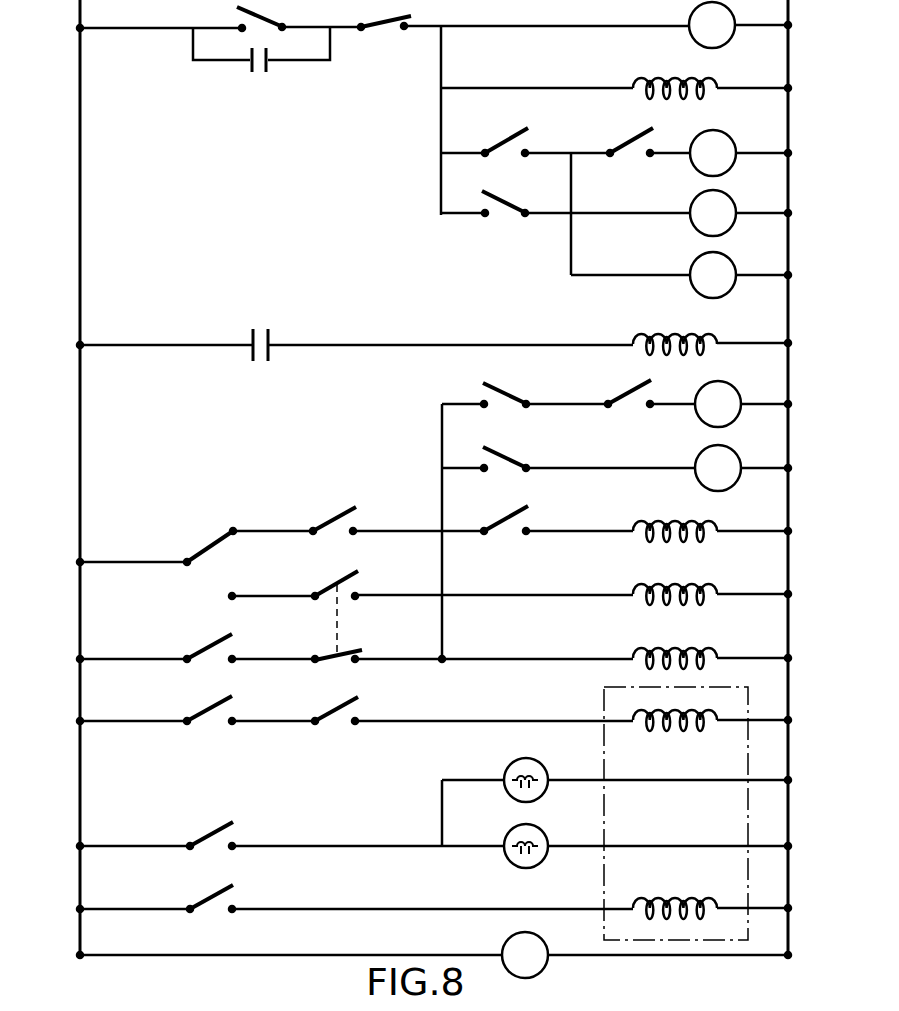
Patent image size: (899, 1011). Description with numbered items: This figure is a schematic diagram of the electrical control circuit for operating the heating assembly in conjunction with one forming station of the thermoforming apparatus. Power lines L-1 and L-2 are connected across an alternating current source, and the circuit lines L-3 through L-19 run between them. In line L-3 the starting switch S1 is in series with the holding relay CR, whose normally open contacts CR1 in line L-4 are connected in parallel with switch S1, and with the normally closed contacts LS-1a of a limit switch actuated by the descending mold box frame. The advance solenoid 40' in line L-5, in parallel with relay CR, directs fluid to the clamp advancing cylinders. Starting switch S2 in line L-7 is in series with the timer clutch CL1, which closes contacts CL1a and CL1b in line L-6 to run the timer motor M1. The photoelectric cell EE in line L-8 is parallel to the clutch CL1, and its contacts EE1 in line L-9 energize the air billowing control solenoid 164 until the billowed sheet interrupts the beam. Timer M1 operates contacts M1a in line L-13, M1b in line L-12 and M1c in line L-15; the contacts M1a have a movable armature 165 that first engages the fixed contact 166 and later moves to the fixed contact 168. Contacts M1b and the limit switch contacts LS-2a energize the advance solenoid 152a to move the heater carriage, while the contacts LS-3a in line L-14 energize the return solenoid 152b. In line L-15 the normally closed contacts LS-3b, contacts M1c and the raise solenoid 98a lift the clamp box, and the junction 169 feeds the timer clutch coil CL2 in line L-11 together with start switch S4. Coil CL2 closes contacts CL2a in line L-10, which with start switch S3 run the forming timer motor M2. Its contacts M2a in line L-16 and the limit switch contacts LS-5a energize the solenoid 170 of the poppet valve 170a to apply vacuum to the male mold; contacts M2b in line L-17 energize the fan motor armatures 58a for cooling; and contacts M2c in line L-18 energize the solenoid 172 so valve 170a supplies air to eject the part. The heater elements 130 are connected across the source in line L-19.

The power line L-1 is at (80, 12).
The power line L-2 is at (790, 12).
The circuit line L-3 is at (103, 28).
The circuit line L-4 is at (302, 62).
The circuit line L-5 is at (464, 87).
The circuit line L-6 is at (466, 153).
The circuit line L-7 is at (464, 215).
The circuit line L-8 is at (646, 276).
The circuit line L-9 is at (458, 342).
The circuit line L-10 is at (466, 408).
The circuit line L-11 is at (466, 472).
The circuit line L-12 is at (276, 531).
The circuit line L-13 is at (138, 564).
The circuit line L-14 is at (466, 594).
The circuit line L-15 is at (466, 659).
The circuit line L-16 is at (466, 721).
The circuit line L-17 is at (388, 846).
The circuit line L-18 is at (392, 908).
The circuit line L-19 is at (395, 955).
The starting switch S1 is at (271, 14).
The starting switch S2 is at (508, 203).
The start switch S3 is at (507, 392).
The start switch S4 is at (505, 458).
The normally closed limit switch contacts LS-1a is at (396, 22).
The normally open limit switch contacts LS-2a is at (512, 520).
The normally open limit switch contacts LS-3a is at (332, 600).
The normally closed limit switch contacts LS-3b is at (328, 662).
The normally open limit switch contacts LS-5a is at (332, 727).
The holding relay CR is at (718, 38).
The normally open contacts CR1 is at (258, 72).
The normally open contacts CL1a is at (500, 134).
The normally open contacts CL1b is at (638, 136).
The timer clutch CL1 is at (720, 226).
The normally open contacts CL2a is at (629, 394).
The timer clutch coil CL2 is at (726, 481).
The timer motor M1 is at (715, 166).
The timer switch contacts M1a is at (213, 570).
The normally open timer contacts M1b is at (330, 515).
The timer contacts M1c is at (208, 652).
The forming timer motor M2 is at (722, 417).
The normally open timer contacts M2a is at (215, 713).
The timer contacts M2b is at (214, 833).
The timer contacts M2c is at (214, 895).
The photoelectric cell EE is at (722, 288).
The photoelectric cell contacts EE1 is at (262, 336).
The advance solenoid 40' is at (693, 72).
The air billowing control solenoid 164 is at (710, 330).
The movable armature 165 is at (212, 546).
The fixed contact 166 is at (230, 526).
The fixed contact 168 is at (234, 594).
The junction 169 is at (433, 658).
The advance solenoid 152a is at (700, 525).
The return solenoid 152b is at (700, 584).
The raise solenoid 98a is at (700, 651).
The solenoid 170 is at (674, 730).
The poppet type valve 170a is at (748, 832).
The solenoid 172 is at (670, 903).
The fan motor armatures 58a is at (536, 832).
The heater elements 130 is at (542, 952).